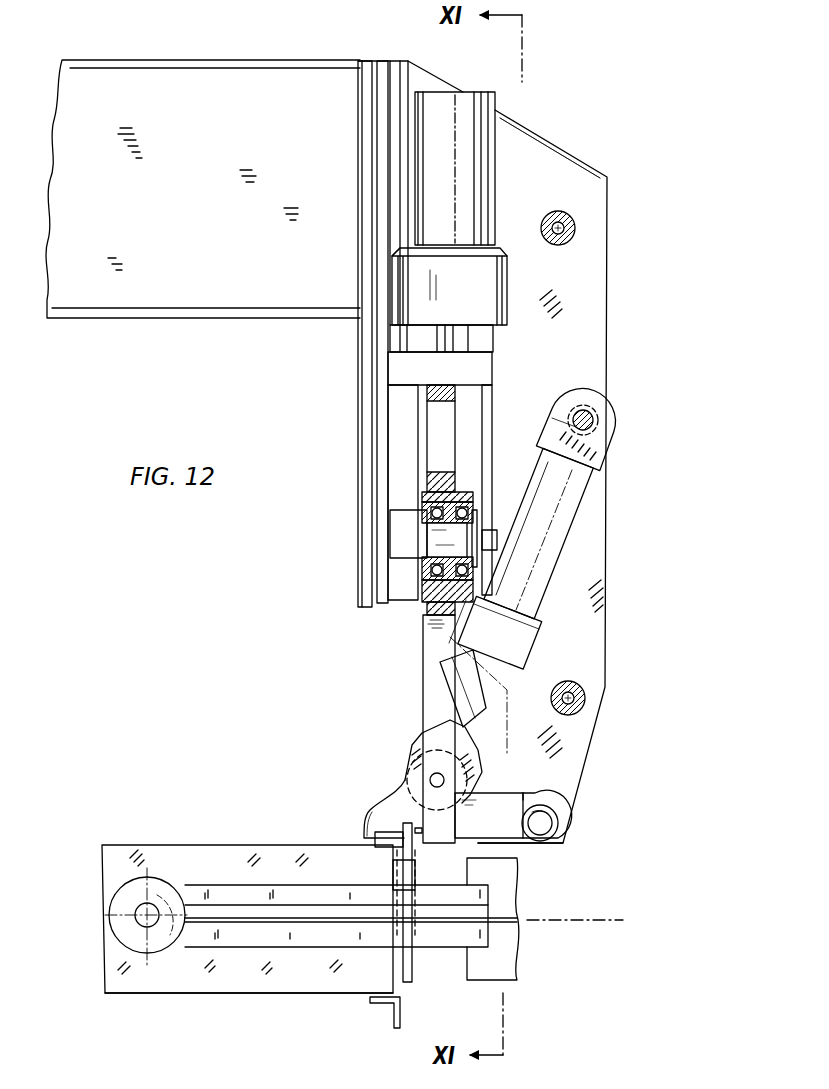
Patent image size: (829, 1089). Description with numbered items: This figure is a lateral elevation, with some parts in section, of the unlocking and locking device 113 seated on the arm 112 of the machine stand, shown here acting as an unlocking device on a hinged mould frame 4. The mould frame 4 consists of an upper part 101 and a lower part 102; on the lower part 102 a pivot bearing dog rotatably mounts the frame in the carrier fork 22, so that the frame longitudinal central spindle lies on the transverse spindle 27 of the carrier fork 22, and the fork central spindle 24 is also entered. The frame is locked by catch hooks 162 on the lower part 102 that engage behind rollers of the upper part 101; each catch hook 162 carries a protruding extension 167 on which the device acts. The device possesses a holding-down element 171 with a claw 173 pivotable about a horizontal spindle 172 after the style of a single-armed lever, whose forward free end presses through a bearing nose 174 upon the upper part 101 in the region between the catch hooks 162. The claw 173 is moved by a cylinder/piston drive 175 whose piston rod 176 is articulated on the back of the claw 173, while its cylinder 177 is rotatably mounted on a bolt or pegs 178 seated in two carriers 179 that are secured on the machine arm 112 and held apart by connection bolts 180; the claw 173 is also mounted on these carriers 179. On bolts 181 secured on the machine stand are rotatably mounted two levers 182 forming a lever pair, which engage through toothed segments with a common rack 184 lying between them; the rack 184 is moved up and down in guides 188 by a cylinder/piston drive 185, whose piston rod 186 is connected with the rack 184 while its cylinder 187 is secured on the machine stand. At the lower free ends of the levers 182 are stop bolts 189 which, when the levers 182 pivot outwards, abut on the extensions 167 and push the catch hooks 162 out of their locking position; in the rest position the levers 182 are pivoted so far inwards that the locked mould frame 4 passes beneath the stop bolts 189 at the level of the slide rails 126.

The arm 112 is at (165, 78).
The unlocking and locking device 113 is at (345, 519).
The carriers 179 is at (590, 636).
The cylinder/piston drive 185 is at (499, 212).
The connection bolts 180 is at (572, 231).
The cylinder 187 is at (437, 143).
The piston rod 186 is at (460, 338).
The guides 188 is at (400, 395).
The rack 184 is at (427, 397).
The levers 182 is at (435, 453).
The bolts 181 is at (437, 535).
The cylinder/piston drive 175 is at (562, 560).
The bolt or pegs 178 is at (595, 420).
The cylinder 177 is at (572, 490).
The piston rod 176 is at (475, 692).
The holding-down element 171 is at (388, 790).
The protruding extension 167 is at (375, 822).
The bearing nose 174 is at (398, 832).
The bolts 189 is at (413, 842).
The catch hooks 162 is at (406, 862).
The claw 173 is at (495, 830).
The horizontal spindle 172 is at (560, 826).
The upper part 101 is at (187, 856).
The lower part 102 is at (165, 980).
The mould frame 4 is at (96, 944).
The transverse spindle 27 is at (143, 912).
The carrier fork 22 is at (252, 952).
The fork central spindle 24 is at (600, 920).
The slide rails 126 is at (390, 998).